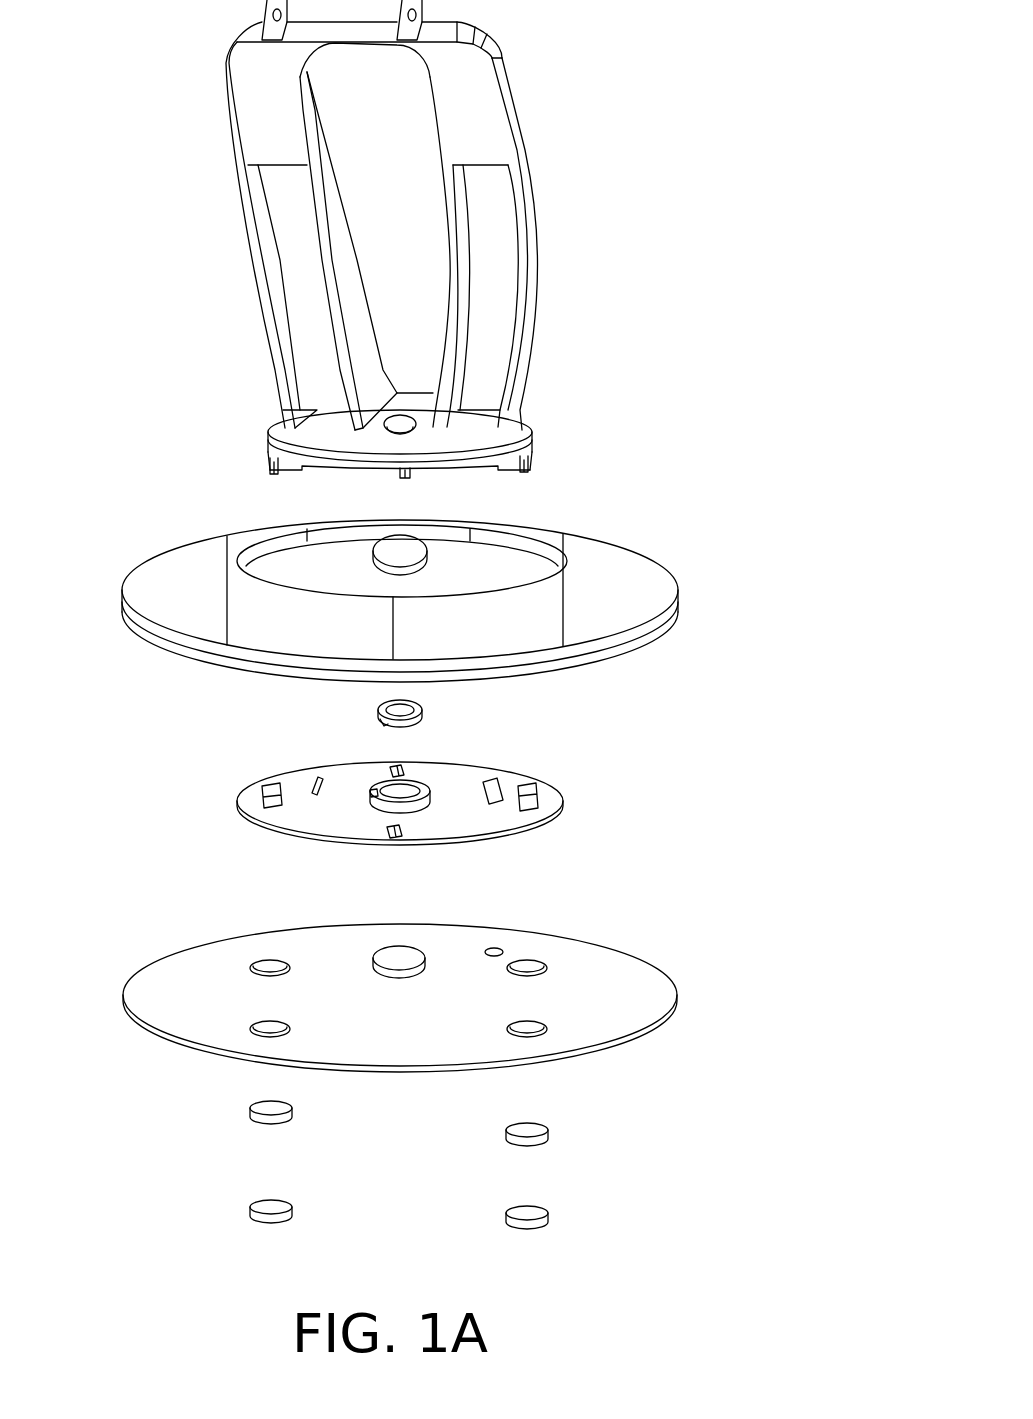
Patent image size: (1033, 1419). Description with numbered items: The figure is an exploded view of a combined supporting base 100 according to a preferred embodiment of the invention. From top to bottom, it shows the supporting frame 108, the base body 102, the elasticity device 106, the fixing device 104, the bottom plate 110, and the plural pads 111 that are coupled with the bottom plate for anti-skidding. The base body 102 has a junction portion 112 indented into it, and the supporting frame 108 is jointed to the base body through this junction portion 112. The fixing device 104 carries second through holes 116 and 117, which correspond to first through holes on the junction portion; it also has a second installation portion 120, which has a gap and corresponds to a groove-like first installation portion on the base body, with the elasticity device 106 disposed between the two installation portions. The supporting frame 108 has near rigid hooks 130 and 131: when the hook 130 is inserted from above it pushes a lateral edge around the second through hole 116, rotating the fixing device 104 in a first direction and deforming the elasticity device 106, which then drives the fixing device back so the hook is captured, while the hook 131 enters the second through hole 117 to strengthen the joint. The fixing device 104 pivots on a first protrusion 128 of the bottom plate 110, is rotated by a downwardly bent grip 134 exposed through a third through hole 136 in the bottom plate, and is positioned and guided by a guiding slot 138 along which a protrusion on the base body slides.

The combined supporting base 100 is at (195, 1267).
The base body 102 is at (628, 575).
The fixing device 104 is at (548, 793).
The elasticity device 106 is at (421, 713).
The supporting frame 108 is at (512, 98).
The bottom plate 110 is at (655, 994).
The pads 111 is at (250, 1118).
The junction portion 112 is at (450, 562).
The second through hole 116 is at (386, 828).
The second through hole 117 is at (263, 793).
The second installation portion 120 is at (378, 789).
The first protrusion 128 is at (392, 948).
The hook 130 is at (400, 472).
The hook 131 is at (270, 465).
The grip 134 is at (498, 804).
The third through hole 136 is at (498, 948).
The guiding slot 138 is at (302, 785).